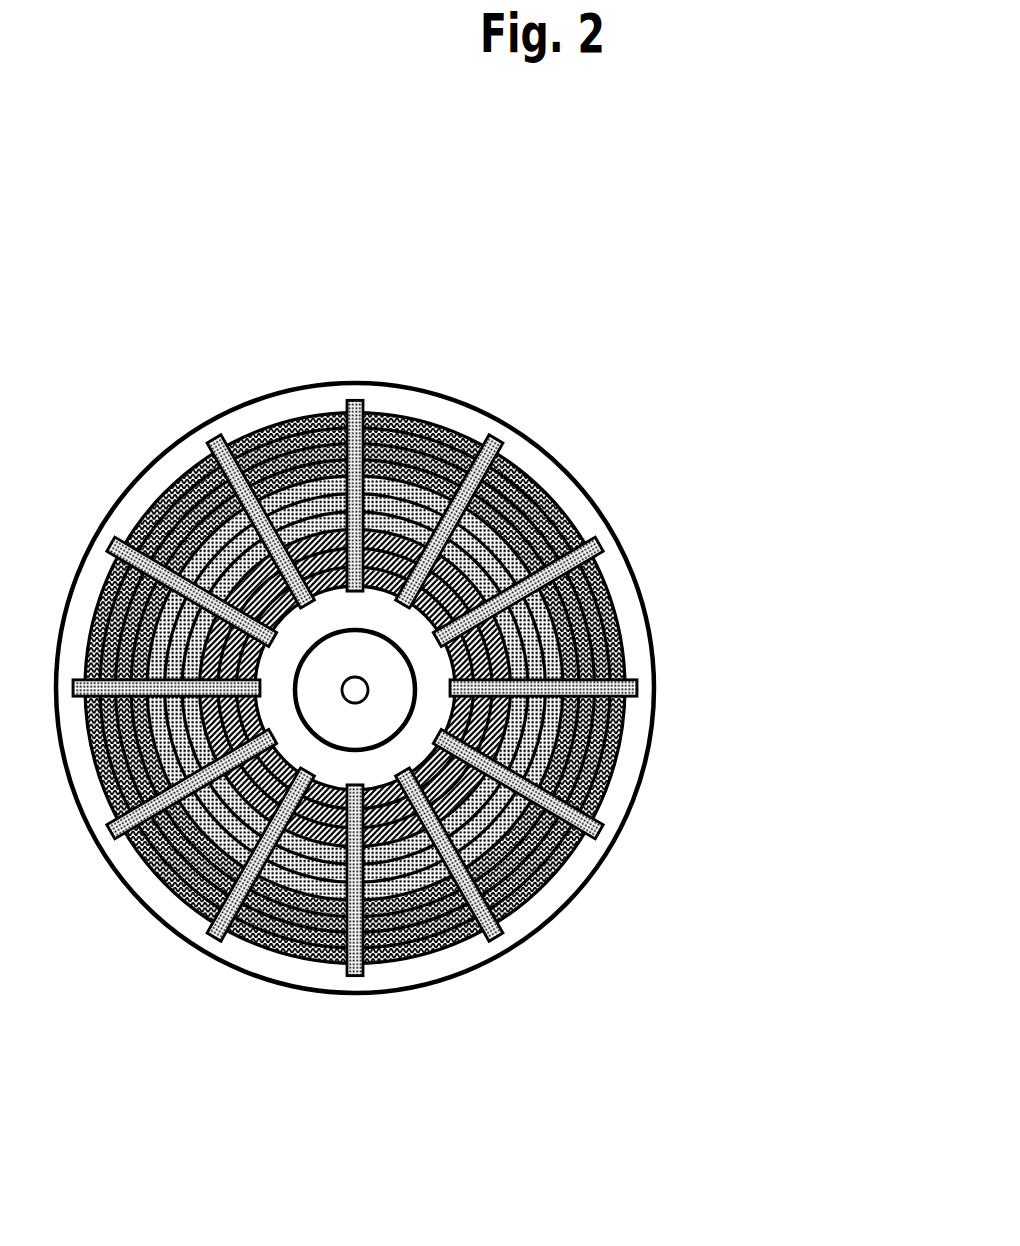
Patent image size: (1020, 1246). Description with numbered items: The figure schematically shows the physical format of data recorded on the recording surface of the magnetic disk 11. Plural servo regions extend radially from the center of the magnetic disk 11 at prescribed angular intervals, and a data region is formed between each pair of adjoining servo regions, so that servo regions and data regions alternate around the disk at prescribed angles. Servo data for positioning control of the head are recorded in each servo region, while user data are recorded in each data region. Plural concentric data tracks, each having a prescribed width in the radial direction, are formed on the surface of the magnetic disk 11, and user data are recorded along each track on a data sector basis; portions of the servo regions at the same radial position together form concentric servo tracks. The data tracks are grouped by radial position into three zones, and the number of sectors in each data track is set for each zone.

The magnetic disk 11 is at (267, 1050).